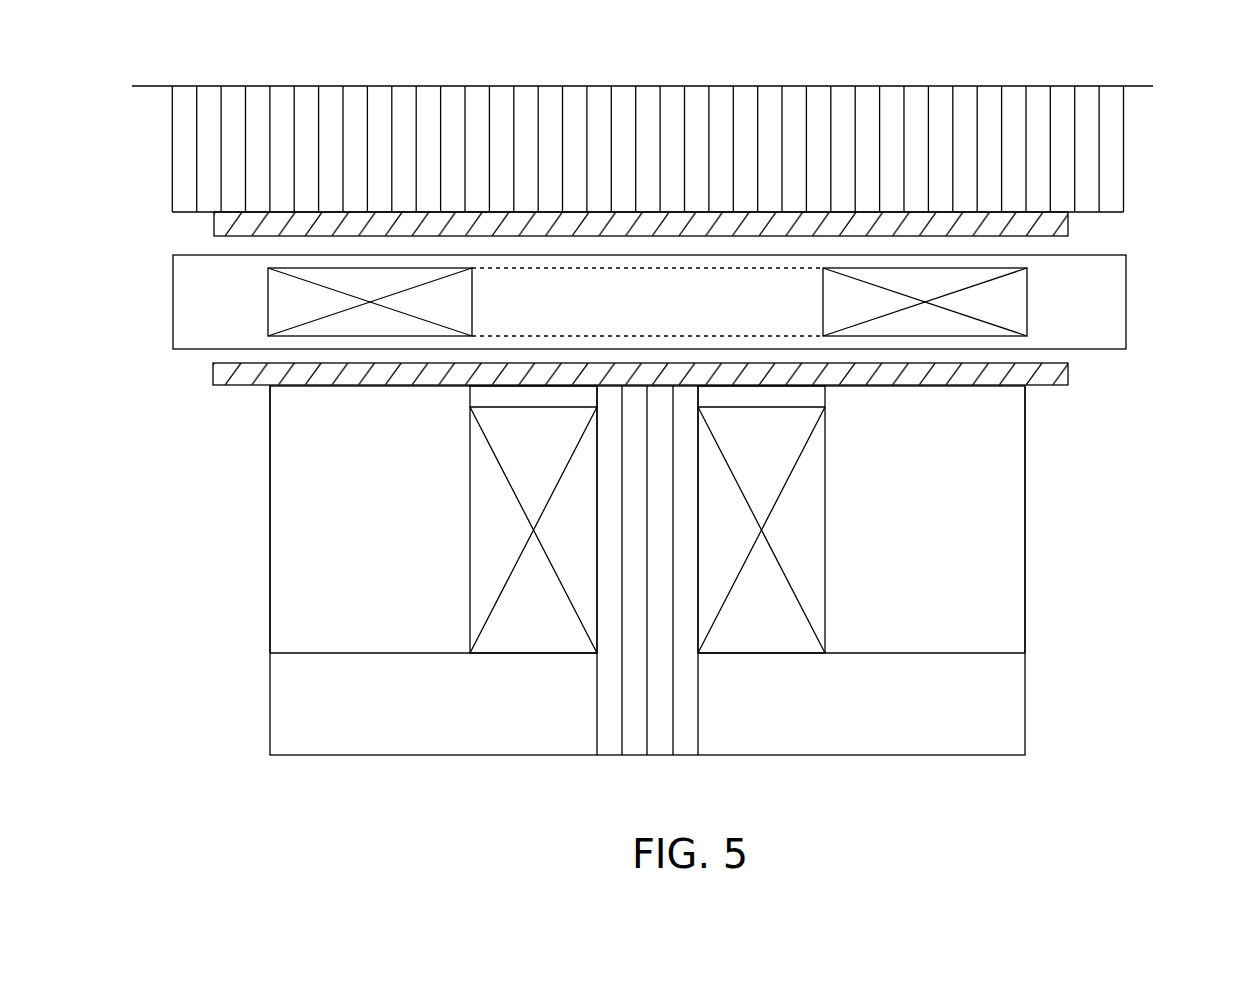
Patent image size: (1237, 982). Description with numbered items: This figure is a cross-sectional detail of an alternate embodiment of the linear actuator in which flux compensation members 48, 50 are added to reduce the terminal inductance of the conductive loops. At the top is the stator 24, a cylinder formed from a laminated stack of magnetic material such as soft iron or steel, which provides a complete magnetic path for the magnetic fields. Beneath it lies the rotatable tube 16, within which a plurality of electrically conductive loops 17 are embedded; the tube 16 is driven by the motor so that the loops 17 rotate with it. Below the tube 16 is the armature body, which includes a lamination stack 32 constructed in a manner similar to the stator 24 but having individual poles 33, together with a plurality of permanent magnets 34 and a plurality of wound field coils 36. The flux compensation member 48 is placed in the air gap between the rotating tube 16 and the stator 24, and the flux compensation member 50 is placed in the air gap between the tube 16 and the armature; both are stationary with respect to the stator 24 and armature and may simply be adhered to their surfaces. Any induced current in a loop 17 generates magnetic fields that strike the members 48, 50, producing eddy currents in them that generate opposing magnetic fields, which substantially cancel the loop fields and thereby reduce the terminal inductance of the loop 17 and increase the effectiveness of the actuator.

The stator 24 is at (1065, 155).
The flux compensation member 48 is at (1068, 218).
The tube 16 is at (1100, 305).
The electrically conductive loop 17 is at (452, 292).
The flux compensation member 50 is at (1068, 372).
The lamination stack 32 is at (1010, 716).
The permanent magnet 34 is at (977, 543).
The wound field coil 36 is at (722, 447).
The pole 33 is at (637, 747).